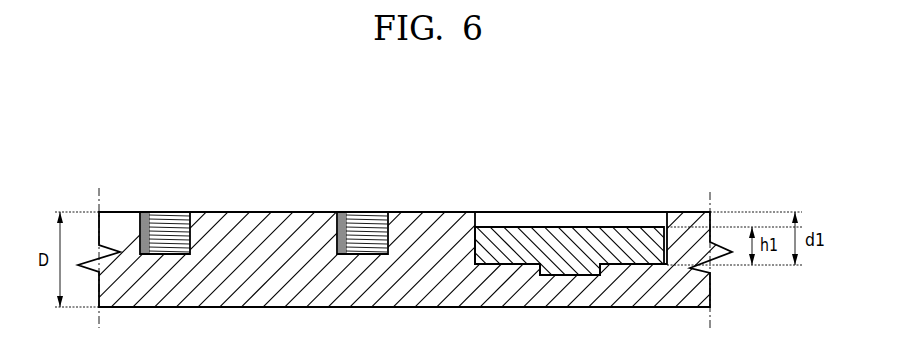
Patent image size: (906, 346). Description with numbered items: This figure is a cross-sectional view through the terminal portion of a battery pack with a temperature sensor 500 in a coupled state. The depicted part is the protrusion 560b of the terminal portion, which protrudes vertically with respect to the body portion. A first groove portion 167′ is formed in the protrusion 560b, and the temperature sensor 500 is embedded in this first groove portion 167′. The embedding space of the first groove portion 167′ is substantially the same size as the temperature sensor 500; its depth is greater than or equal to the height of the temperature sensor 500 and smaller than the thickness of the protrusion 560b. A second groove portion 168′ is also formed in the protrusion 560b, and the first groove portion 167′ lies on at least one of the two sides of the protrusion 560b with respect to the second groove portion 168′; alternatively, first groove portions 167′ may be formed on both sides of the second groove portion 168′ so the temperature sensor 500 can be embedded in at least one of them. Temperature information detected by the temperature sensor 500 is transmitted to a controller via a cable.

The second groove portion 168′ is at (357, 212).
The first groove portion 167′ is at (665, 214).
The temperature sensor 500 is at (608, 237).
The protrusion 560b is at (692, 220).